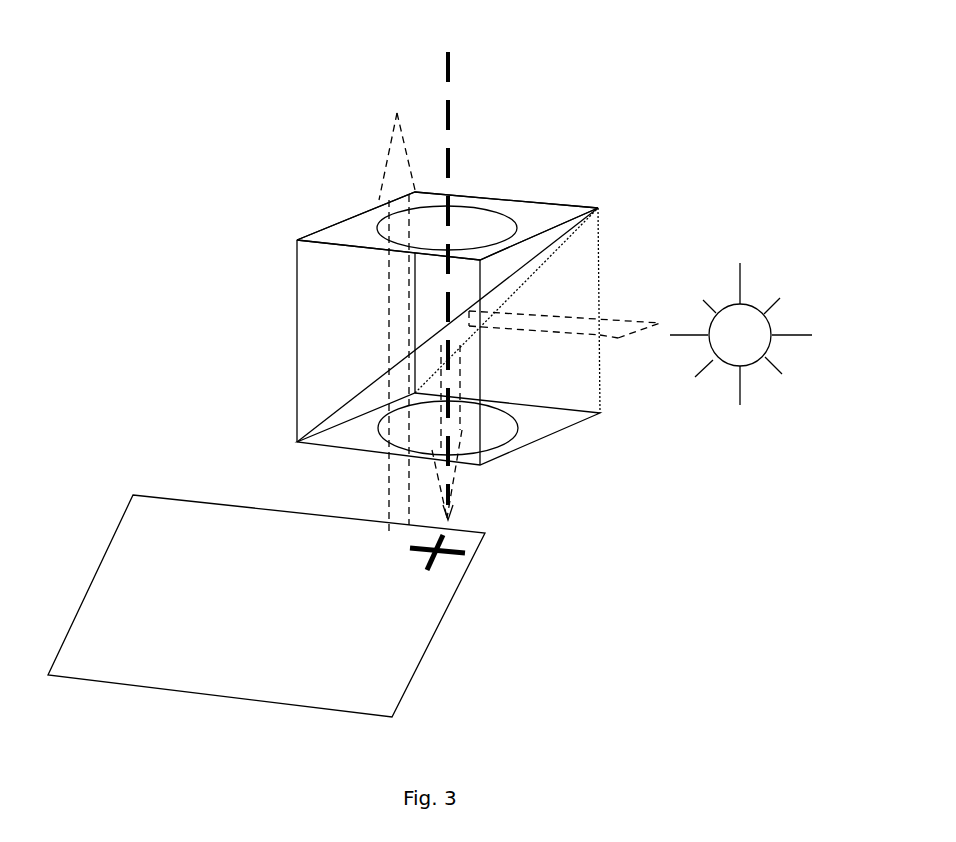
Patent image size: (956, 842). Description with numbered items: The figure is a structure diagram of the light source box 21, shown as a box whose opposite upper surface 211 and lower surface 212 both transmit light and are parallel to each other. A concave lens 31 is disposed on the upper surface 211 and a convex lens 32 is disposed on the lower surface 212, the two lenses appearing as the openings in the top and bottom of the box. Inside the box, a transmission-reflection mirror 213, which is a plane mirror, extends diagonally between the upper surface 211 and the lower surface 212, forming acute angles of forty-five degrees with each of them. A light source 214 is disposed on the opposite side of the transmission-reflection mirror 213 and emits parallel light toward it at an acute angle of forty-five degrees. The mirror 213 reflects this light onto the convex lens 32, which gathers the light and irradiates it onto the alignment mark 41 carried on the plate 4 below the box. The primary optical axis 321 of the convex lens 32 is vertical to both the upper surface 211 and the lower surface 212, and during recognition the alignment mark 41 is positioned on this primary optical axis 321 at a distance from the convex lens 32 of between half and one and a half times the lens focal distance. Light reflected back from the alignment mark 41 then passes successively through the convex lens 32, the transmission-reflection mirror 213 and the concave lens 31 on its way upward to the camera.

The light source box 21 is at (598, 207).
The upper surface 211 is at (337, 231).
The lower surface 212 is at (553, 422).
The transmission-reflection mirror 213 is at (352, 402).
The light source 214 is at (742, 323).
The concave lens 31 is at (460, 221).
The convex lens 32 is at (497, 435).
The primary optical axis 321 is at (450, 63).
The target plate 4 is at (258, 663).
The alignment mark 41 is at (453, 557).